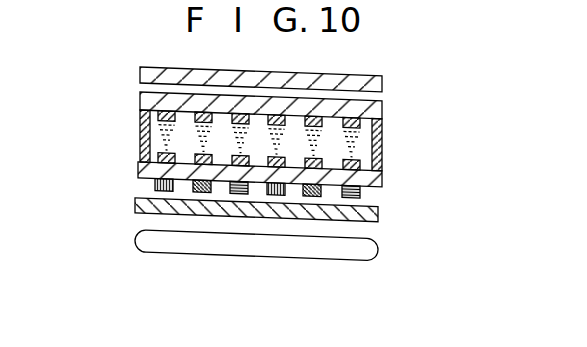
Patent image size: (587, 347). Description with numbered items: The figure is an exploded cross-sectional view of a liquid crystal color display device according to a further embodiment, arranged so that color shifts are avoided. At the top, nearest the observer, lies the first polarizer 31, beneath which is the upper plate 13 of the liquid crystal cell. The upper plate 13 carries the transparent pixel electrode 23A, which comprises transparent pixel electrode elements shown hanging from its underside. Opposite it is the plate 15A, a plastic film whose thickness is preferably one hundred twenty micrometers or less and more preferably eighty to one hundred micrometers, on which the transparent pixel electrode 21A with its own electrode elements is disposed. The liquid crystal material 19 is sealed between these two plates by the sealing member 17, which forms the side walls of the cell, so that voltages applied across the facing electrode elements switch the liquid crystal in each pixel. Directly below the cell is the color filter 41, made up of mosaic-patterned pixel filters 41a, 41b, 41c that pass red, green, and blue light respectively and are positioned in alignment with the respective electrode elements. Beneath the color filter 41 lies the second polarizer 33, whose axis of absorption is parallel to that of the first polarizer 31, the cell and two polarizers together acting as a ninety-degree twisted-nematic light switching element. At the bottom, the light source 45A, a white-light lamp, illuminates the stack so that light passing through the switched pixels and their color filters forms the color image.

The first polarizer 31 is at (382, 83).
The upper plate 13 is at (382, 103).
The sealing member 17 is at (382, 133).
The plate 15A is at (378, 181).
The transparent pixel electrode 23A is at (383, 123).
The transparent pixel electrode 21A is at (382, 168).
The liquid crystal material 19 is at (363, 148).
The color filter 41 is at (189, 195).
The pixel filter 41a is at (156, 183).
The pixel filter 41b is at (230, 195).
The pixel filter 41c is at (193, 194).
The second polarizer 33 is at (378, 216).
The light source 45A is at (378, 249).